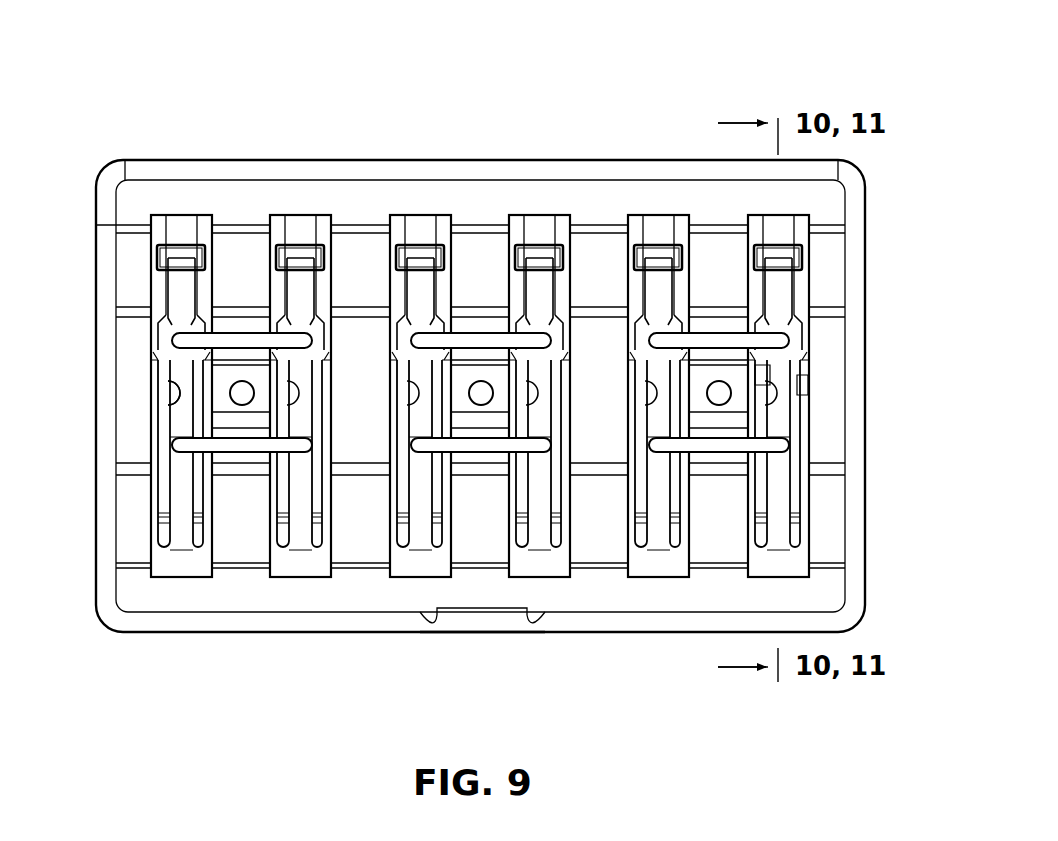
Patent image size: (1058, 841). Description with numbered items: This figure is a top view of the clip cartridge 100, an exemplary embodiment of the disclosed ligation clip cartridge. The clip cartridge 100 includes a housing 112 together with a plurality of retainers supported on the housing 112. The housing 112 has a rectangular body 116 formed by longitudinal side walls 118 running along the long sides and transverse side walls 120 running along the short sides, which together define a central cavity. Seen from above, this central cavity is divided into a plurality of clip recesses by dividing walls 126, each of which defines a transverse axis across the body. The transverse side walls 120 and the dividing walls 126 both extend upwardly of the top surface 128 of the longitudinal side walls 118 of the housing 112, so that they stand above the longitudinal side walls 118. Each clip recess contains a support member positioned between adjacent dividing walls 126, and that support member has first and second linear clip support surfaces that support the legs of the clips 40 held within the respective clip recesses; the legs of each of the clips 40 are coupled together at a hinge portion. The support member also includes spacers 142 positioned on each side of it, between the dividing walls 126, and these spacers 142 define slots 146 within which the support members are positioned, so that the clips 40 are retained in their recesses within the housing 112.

The clip cartridge 100 is at (819, 70).
The housing 112 is at (871, 454).
The rectangular body 116 is at (655, 633).
The longitudinal side walls 118 is at (187, 190).
The transverse side walls 120 is at (853, 290).
The dividing walls 126 is at (233, 530).
The top surface 128 is at (688, 195).
The spacers 142 is at (803, 385).
The slots 146 is at (175, 393).
The clips 40 is at (781, 252).